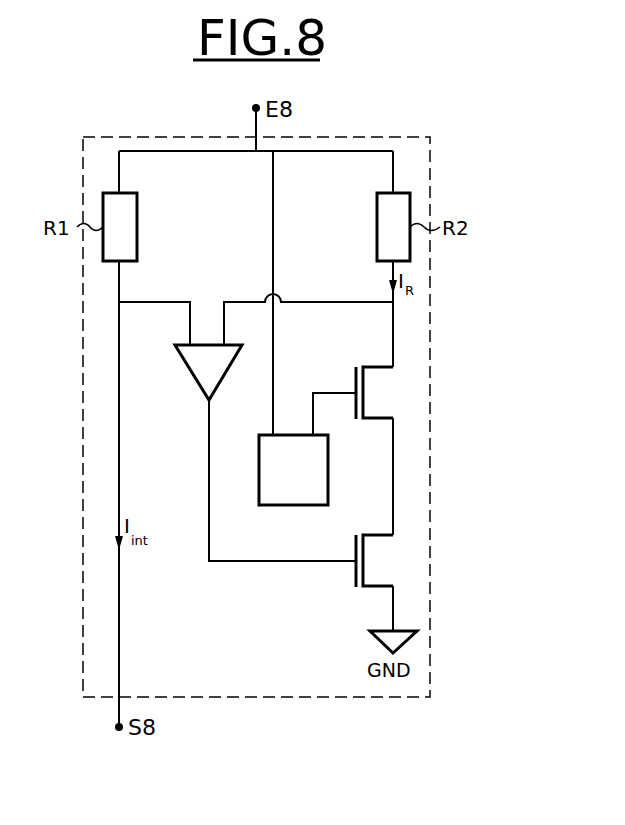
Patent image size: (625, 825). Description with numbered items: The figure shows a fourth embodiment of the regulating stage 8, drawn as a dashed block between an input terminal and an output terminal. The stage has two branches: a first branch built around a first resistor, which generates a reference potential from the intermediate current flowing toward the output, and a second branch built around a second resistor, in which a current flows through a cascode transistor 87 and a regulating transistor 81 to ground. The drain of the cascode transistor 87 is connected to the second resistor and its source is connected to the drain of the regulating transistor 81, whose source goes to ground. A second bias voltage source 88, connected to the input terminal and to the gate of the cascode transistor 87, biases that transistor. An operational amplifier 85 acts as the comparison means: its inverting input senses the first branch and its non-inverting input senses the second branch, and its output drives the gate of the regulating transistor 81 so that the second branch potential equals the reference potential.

The regulating stage 8 is at (430, 418).
The operational amplifier 85 is at (207, 326).
The second bias voltage source 88 is at (260, 433).
The cascode transistor 87 is at (401, 388).
The regulating transistor 81 is at (401, 554).